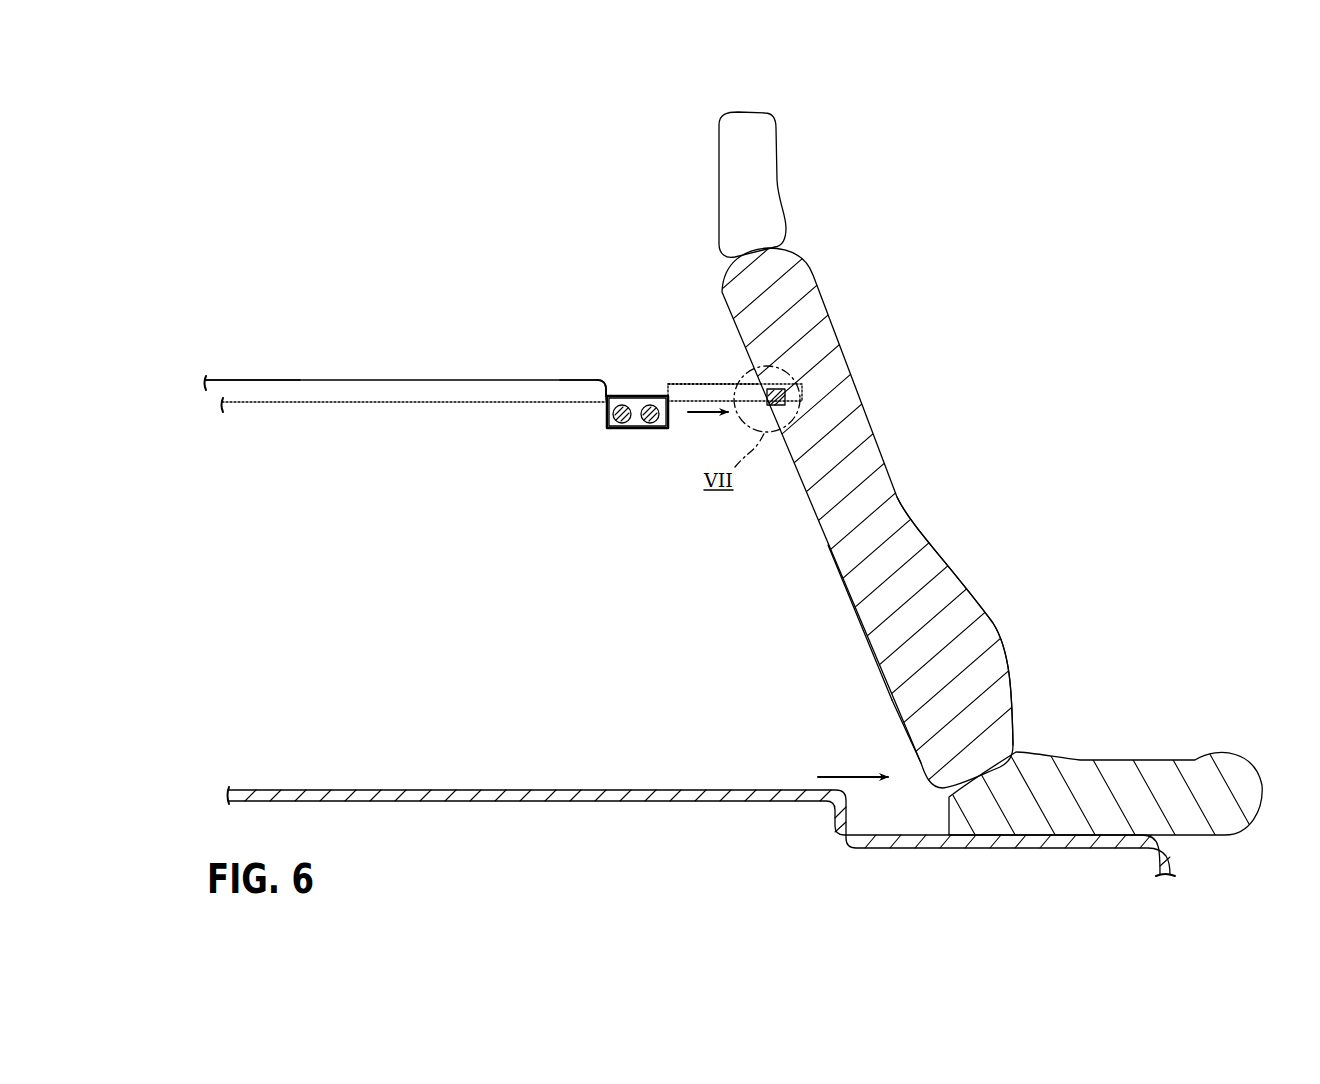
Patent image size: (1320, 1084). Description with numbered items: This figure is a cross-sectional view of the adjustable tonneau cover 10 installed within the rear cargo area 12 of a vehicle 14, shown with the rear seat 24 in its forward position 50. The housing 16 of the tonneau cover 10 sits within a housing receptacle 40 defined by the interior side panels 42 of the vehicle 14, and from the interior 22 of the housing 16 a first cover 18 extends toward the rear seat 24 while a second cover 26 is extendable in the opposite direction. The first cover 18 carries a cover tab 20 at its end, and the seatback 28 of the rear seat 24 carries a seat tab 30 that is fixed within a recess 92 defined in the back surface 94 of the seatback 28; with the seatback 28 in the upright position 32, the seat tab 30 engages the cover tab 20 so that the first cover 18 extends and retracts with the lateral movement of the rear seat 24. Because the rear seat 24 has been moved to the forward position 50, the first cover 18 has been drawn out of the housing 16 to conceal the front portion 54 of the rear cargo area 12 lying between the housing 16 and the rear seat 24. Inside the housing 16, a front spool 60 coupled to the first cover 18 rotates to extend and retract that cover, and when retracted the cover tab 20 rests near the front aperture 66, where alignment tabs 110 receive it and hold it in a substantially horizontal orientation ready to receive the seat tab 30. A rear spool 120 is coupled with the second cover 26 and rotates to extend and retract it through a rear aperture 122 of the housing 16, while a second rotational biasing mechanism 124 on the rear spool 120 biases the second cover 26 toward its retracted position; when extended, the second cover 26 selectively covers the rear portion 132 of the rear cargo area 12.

The adjustable tonneau cover 10 is at (420, 355).
The rear cargo area 12 is at (337, 350).
The vehicle 14 is at (803, 200).
The housing 16 is at (607, 424).
The first cover 18 is at (700, 394).
The cover tab 20 is at (805, 404).
The interior 22 is at (612, 404).
The rear seat 24 is at (1085, 757).
The second cover 26 is at (305, 404).
The seatback 28 is at (900, 509).
The seat tab 30 is at (785, 390).
The upright position 32 is at (998, 580).
The housing receptacle 40 is at (612, 430).
The interior side panels 42 is at (268, 390).
The forward position 50 is at (890, 705).
The front portion 54 is at (693, 760).
The front spool 60 is at (668, 428).
The front aperture 66 is at (623, 410).
The recess 92 is at (790, 400).
The back surface 94 is at (856, 617).
The alignment tabs 110 is at (670, 417).
The rear spool 120 is at (607, 418).
The rear aperture 122 is at (605, 402).
The second rotational biasing mechanism 124 is at (603, 400).
The rear portion 132 is at (415, 577).